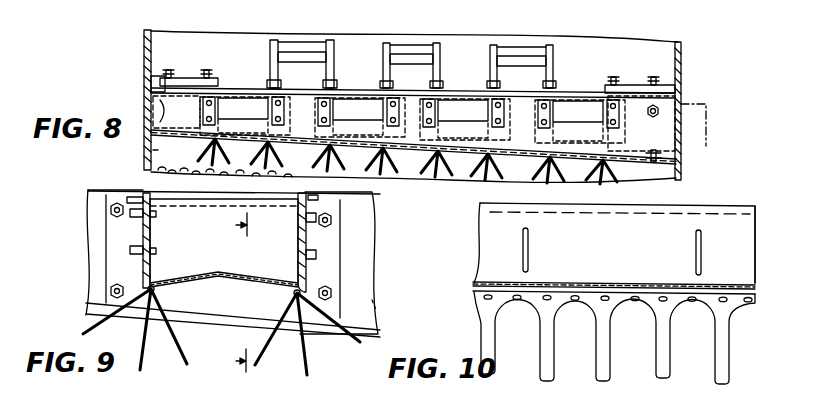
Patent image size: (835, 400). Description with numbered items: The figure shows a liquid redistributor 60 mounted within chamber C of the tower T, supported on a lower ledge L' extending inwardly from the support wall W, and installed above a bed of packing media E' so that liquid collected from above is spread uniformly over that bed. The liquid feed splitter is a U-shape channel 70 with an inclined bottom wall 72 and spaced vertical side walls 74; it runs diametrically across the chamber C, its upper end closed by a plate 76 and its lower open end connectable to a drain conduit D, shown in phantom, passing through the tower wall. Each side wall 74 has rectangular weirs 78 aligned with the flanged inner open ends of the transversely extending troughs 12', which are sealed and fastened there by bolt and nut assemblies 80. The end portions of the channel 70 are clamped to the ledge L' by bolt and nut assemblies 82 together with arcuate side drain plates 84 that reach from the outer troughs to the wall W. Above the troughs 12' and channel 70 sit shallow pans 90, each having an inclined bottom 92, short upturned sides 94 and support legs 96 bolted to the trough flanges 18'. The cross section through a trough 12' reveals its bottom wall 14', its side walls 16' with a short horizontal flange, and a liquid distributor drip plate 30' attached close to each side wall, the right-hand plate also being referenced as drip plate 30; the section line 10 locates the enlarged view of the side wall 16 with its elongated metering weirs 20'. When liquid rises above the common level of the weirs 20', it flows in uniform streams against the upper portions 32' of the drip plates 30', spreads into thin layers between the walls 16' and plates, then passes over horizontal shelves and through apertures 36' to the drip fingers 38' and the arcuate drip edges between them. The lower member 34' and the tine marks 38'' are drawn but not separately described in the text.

In FIG. 8, the side liquid drain pans or plates 84 is at (188, 76).
In FIG. 8, the bolt and nut assemblies 82 is at (212, 77).
In FIG. 8, the support legs 96 is at (273, 68).
In FIG. 8, the short up turn sides 94 is at (310, 41).
In FIG. 8, the chamber C is at (368, 52).
In FIG. 8, the inclined bottom 92 is at (400, 58).
In FIG. 8, the shallow pans 90 is at (506, 53).
In FIG. 8, the liquid redistributor 60 is at (557, 63).
In FIG. 8, the tower T is at (684, 50).
In FIG. 8, the support wall W is at (683, 63).
In FIG. 8, the troughs or receptacles 12' is at (258, 100).
In FIG. 9, the troughs or receptacles 12' is at (224, 253).
In FIG. 10, the troughs or receptacles 12' is at (639, 235).
In FIG. 8, the rectangular apertures, openings or weirs 78 is at (355, 103).
In FIG. 9, the rectangular apertures, openings or weirs 78 is at (271, 253).
In FIG. 8, the inclined bottom wall 72 is at (408, 97).
In FIG. 8, the side walls 74 is at (515, 116).
In FIG. 9, the side walls 74 is at (372, 244).
In FIG. 8, the ledge L' is at (155, 106).
In FIG. 8, the plate 76 is at (150, 133).
In FIG. 8, the bed of tower packing media E' is at (163, 153).
In FIG. 8, the U-shape channel or trough 70 is at (408, 97).
In FIG. 9, the U-shape channel or trough 70 is at (374, 273).
In FIG. 8, the tines 38'' is at (407, 168).
In FIG. 8, the drain conduit or channel D is at (707, 145).
In FIG. 8, the liquid distributor drip plates 30' is at (672, 139).
In FIG. 9, the liquid distributor drip plates 30' is at (98, 240).
In FIG. 10, the liquid distributor drip plates 30' is at (632, 279).
In FIG. 9, the flange portions 18' is at (96, 188).
In FIG. 9, the upper portions 32' is at (95, 228).
In FIG. 9, the bolt and nut assemblies 80 is at (112, 290).
In FIG. 9, the lower frame member 34' is at (213, 320).
In FIG. 10, the lower frame member 34' is at (614, 270).
In FIG. 9, the metering weirs 20' is at (173, 232).
In FIG. 10, the metering weirs 20' is at (612, 250).
In FIG. 9, the apertures 36' is at (224, 272).
In FIG. 10, the apertures 36' is at (618, 321).
In FIG. 9, the bottom wall 14' is at (224, 266).
In FIG. 10, the bottom wall 14' is at (614, 272).
In FIG. 9, the side walls 16' is at (234, 215).
In FIG. 9, the liquid distributor 10 is at (226, 292).
In FIG. 9, the liquid distributor drip plate 30 is at (333, 250).
In FIG. 9, the drip fingers 38' is at (221, 332).
In FIG. 10, the drip fingers 38' is at (614, 338).
In FIG. 10, the side walls 16 is at (770, 244).